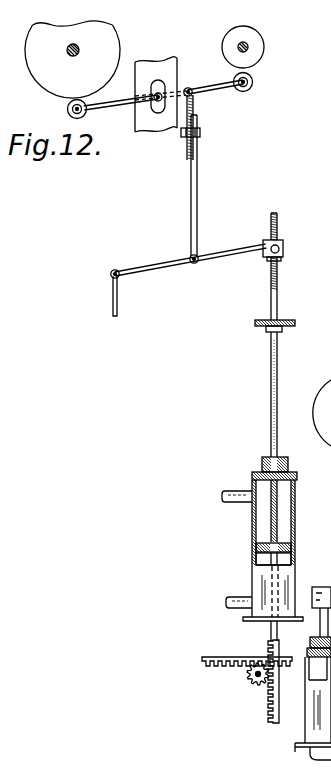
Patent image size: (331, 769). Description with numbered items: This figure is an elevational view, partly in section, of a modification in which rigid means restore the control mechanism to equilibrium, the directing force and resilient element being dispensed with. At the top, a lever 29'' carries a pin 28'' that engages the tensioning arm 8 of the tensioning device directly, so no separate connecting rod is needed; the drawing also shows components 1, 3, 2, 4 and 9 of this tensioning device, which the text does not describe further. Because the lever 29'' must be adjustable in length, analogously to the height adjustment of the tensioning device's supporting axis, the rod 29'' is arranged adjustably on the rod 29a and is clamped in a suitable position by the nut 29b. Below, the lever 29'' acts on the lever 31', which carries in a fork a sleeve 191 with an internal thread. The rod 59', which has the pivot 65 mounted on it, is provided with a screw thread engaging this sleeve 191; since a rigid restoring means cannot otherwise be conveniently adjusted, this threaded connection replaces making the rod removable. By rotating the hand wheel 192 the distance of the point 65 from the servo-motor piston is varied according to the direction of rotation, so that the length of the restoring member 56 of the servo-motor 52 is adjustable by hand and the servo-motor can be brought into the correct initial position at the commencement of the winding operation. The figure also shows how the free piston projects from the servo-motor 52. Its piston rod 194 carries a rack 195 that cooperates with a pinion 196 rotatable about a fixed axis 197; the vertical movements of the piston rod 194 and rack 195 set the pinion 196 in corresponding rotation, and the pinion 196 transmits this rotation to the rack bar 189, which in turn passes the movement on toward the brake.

The shaft of cam disc 1 is at (81, 47).
The cam disc 3 is at (115, 52).
The tensioning arm 8 is at (105, 111).
The slotted guide plate 9 is at (155, 102).
The pin 28'' is at (214, 77).
The second cam disc 2 is at (257, 38).
The shaft of second cam disc 4 is at (249, 49).
The rod 29a is at (197, 107).
The nut 29b is at (185, 136).
The lever 29'' is at (208, 189).
The lever 31' is at (189, 280).
The sleeve 191 is at (266, 259).
The pivot 65 is at (283, 247).
The rod 59' is at (291, 266).
The hand wheel 192 is at (287, 322).
The restoring member 56 is at (271, 439).
The servo-motor 52 is at (296, 522).
The piston rod 194 is at (275, 634).
The rack 195 is at (267, 700).
The rack bar 189 is at (218, 657).
The pinion 196 is at (253, 684).
The fixed axis 197 is at (252, 676).